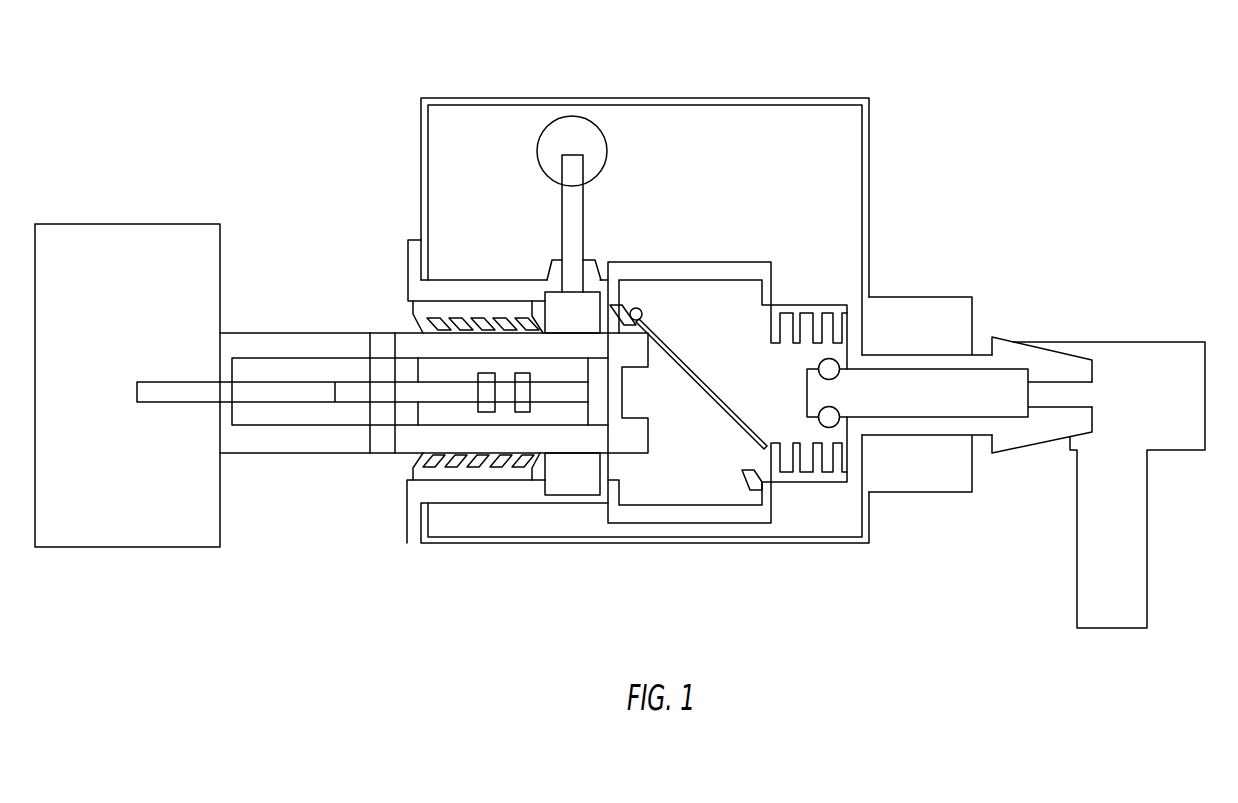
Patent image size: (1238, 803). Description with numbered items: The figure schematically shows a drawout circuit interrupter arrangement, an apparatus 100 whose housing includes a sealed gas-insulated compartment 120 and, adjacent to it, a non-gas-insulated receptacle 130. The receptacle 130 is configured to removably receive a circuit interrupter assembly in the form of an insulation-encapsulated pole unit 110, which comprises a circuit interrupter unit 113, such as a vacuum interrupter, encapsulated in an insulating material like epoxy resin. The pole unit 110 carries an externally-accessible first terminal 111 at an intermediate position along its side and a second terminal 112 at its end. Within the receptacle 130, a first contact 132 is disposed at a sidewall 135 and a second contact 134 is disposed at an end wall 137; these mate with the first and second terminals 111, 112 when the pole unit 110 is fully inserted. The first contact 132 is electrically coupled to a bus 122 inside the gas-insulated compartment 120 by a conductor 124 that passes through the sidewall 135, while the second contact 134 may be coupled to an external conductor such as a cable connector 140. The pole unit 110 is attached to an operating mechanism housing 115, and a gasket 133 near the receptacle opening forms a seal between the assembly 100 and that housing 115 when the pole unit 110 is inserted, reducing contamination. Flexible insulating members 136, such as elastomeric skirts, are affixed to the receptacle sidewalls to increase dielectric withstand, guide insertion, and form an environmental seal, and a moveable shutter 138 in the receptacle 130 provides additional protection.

The apparatus 100 is at (980, 116).
The insulation-encapsulated pole unit 110 is at (313, 447).
The first terminal 111 is at (383, 332).
The second terminal 112 is at (637, 363).
The circuit interrupter unit 113 is at (432, 366).
The operating mechanism housing 115 is at (127, 548).
The gas-insulated compartment 120 is at (795, 130).
The bus 122 is at (600, 155).
The conductor 124 is at (585, 223).
The receptacle 130 is at (662, 492).
The first contact 132 is at (558, 300).
The gasket 133 is at (407, 255).
The second contact 134 is at (815, 398).
The sidewall 135 is at (497, 277).
The flexible insulating members 136 is at (420, 458).
The end wall 137 is at (850, 297).
The moveable shutter 138 is at (683, 355).
The connector 140 is at (1005, 348).